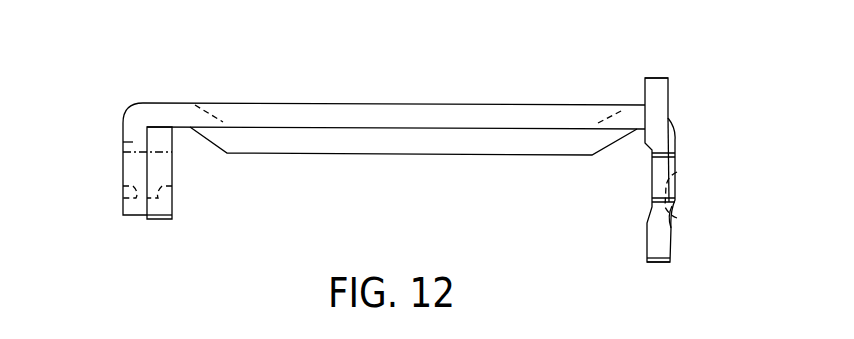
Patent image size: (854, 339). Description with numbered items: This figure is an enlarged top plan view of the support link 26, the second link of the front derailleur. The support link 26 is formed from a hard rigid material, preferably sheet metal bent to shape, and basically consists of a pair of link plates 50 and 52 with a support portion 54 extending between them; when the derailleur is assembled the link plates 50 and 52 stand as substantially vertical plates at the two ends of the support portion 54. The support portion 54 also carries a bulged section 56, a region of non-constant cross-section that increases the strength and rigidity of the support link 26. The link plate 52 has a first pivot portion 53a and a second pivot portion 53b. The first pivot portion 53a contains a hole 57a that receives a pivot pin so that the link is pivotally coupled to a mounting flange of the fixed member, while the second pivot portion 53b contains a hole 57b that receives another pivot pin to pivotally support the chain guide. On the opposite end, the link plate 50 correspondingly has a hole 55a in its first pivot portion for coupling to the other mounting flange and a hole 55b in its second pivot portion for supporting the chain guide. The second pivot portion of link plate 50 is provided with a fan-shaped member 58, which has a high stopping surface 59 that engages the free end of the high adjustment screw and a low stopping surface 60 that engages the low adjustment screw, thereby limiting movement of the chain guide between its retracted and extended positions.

The support link 26 is at (588, 75).
The link plate 50 is at (678, 94).
The link plate 52 is at (116, 130).
The first pivot portion 53a is at (172, 207).
The second pivot portion 53b is at (123, 142).
The support portion 54 is at (381, 94).
The hole 55a is at (677, 172).
The hole 55b is at (677, 218).
The bulged section 56 is at (437, 148).
The hole 57a is at (172, 186).
The hole 57b is at (123, 186).
The fan-shaped member 58 is at (643, 243).
The high stopping surface 59 is at (662, 242).
The low stopping surface 60 is at (660, 85).